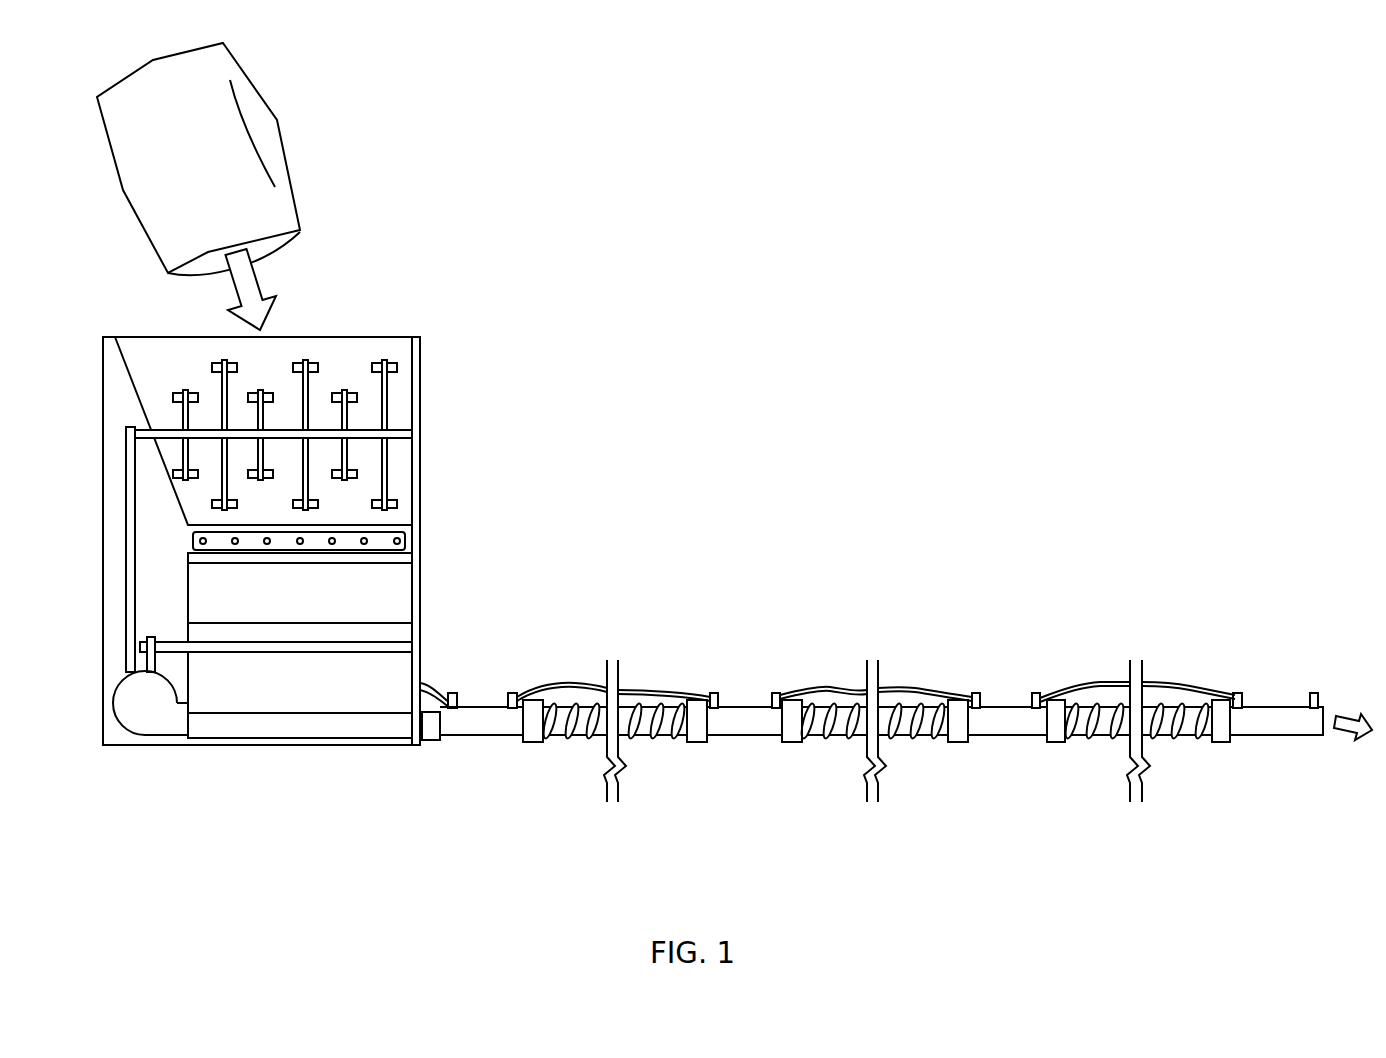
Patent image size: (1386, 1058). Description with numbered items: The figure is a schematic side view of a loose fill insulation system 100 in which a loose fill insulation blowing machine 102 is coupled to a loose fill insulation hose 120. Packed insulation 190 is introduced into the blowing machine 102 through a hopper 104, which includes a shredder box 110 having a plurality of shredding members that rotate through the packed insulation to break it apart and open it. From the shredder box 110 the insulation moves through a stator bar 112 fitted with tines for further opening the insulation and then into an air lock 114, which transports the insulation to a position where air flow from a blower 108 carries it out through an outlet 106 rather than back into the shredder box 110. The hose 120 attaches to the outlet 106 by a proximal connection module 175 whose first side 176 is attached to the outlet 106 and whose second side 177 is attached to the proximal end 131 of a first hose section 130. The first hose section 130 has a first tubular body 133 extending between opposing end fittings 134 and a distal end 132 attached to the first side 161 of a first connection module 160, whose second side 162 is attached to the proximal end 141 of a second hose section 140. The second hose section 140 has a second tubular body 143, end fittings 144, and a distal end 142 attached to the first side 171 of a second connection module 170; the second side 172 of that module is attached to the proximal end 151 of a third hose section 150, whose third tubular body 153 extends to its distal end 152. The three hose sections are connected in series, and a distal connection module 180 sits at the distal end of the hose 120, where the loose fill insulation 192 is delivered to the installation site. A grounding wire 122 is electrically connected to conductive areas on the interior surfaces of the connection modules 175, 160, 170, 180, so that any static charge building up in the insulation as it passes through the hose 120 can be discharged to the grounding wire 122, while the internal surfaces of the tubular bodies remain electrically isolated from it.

The loose fill insulation system 100 is at (1115, 248).
The loose fill insulation blowing machine 102 is at (495, 238).
The hopper 104 is at (348, 310).
The outlet 106 is at (427, 702).
The blower 108 is at (150, 718).
The shredder box 110 is at (367, 418).
The stator bar 112 is at (405, 537).
The air lock 114 is at (276, 645).
The loose fill insulation hose 120 is at (823, 500).
The grounding wire 122 is at (662, 690).
The first hose section 130 is at (588, 757).
The proximal end 131 is at (545, 757).
The distal end 132 is at (675, 753).
The first tubular body 133 is at (582, 707).
The end fittings 134 is at (533, 702).
The second hose section 140 is at (853, 765).
The proximal end 141 is at (825, 762).
The distal end 142 is at (938, 760).
The second tubular body 143 is at (842, 703).
The end fittings 144 is at (792, 702).
The third hose section 150 is at (1117, 763).
The proximal end 151 is at (1080, 763).
The distal end 152 is at (1203, 760).
The third tubular body 153 is at (1097, 707).
The first connection module 160 is at (742, 650).
The first side 161 is at (710, 753).
The second side 162 is at (785, 752).
The second connection module 170 is at (1008, 653).
The first side 171 is at (972, 753).
The second side 172 is at (1044, 752).
The proximal connection module 175 is at (483, 648).
The first side 176 is at (441, 750).
The second side 177 is at (518, 748).
The distal connection module 180 is at (1280, 662).
The packed insulation 190 is at (252, 278).
The loose fill insulation 192 is at (1350, 735).